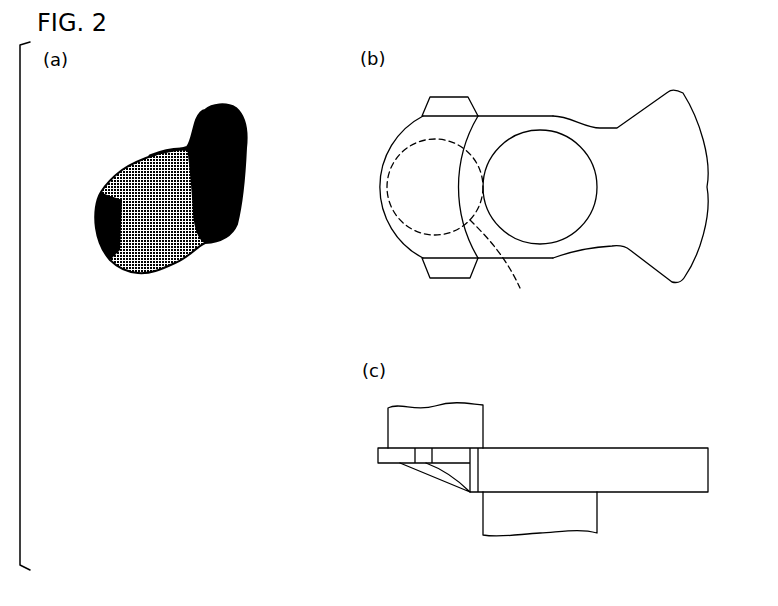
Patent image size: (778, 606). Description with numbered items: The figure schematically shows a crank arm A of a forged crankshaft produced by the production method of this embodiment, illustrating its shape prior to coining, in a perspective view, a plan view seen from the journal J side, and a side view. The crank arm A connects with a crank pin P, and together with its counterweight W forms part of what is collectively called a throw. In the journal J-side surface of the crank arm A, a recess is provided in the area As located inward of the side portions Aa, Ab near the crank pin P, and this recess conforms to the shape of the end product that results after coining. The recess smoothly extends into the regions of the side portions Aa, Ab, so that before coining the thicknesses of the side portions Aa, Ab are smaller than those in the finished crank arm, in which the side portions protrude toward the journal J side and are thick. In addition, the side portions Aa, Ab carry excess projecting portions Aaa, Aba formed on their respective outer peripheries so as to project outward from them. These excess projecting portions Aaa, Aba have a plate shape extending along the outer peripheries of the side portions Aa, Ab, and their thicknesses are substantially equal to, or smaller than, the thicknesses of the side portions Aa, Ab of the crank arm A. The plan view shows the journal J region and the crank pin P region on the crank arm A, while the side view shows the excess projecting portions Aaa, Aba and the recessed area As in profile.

The crank arm A is at (155, 158).
The side portion Aa is at (137, 193).
The excess projecting portion Aaa is at (130, 170).
The side portion Ab is at (135, 262).
The excess projecting portion Aba is at (130, 274).
The recess area As is at (156, 238).
The crank pin P is at (112, 188).
The counterweight W is at (205, 120).
The journal J is at (208, 243).